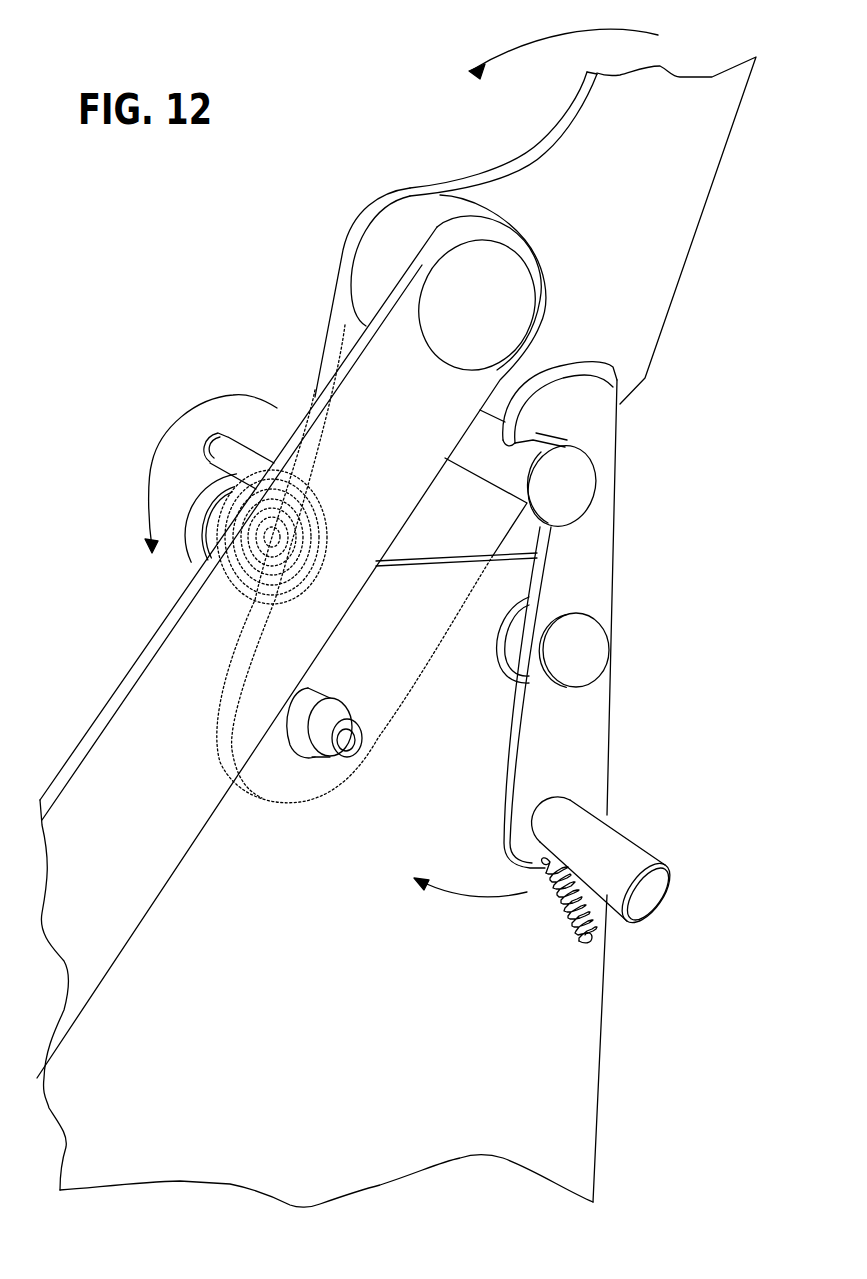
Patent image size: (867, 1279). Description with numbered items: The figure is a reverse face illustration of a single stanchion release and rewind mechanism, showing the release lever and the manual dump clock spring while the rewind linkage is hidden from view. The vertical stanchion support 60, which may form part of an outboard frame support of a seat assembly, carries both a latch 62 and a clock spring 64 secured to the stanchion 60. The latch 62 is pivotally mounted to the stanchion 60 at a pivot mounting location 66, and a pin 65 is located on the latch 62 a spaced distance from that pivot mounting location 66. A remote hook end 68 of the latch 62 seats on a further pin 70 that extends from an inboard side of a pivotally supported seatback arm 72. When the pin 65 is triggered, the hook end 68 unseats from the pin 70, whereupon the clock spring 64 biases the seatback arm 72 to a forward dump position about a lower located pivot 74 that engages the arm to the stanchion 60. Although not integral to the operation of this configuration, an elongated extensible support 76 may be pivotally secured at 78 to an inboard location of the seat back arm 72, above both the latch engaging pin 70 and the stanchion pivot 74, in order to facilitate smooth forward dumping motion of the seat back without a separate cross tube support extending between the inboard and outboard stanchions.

The vertical stanchion support 60 is at (585, 1030).
The latch 62 is at (598, 709).
The clock spring 64 is at (200, 497).
The pin 65 is at (660, 892).
The pivot mounting location 66 is at (590, 643).
The hook end 68 is at (612, 380).
The pin 70 is at (580, 493).
The seatback arm 72 is at (550, 167).
The pivot 74 is at (306, 757).
The elongated extensible support 76 is at (124, 735).
The pivotal securing location 78 is at (390, 243).